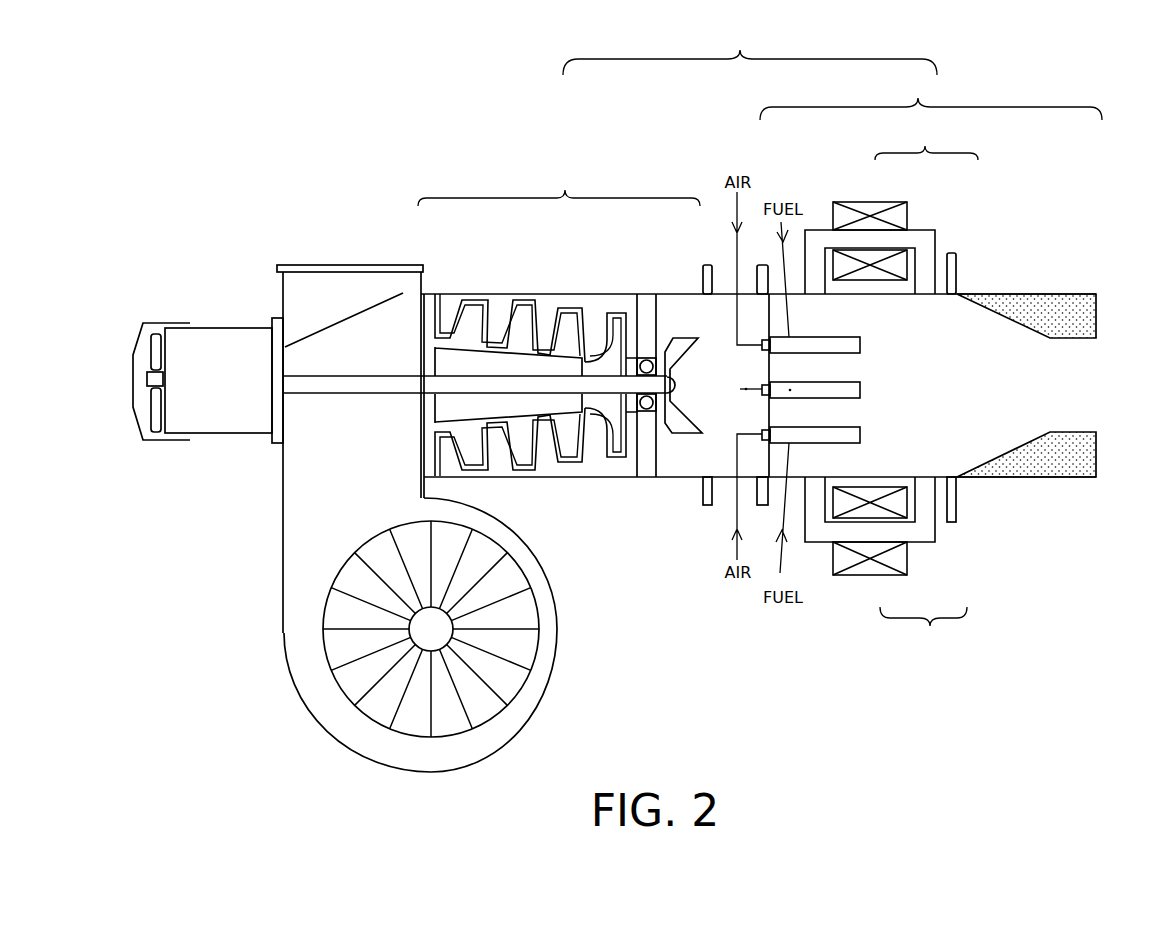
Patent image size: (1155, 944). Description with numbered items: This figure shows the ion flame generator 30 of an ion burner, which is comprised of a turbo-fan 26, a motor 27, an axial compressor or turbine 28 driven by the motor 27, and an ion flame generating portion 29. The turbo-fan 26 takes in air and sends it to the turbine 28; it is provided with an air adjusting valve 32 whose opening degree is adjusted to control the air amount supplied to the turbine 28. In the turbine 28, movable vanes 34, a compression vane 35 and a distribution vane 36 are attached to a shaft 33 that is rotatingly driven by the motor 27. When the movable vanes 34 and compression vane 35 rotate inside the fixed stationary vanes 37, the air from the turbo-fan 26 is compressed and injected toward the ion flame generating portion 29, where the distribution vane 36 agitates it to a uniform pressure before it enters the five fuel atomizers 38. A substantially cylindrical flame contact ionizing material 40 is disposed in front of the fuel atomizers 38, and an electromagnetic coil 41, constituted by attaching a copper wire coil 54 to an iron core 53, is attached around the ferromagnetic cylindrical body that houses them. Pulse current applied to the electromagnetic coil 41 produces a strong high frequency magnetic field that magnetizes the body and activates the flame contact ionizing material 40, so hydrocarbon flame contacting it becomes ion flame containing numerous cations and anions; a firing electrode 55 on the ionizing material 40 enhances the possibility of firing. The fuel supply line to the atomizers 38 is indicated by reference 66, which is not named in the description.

The turbo-fan 26 is at (326, 667).
The motor 27 is at (219, 327).
The axial compressor (turbine) 28 is at (559, 184).
The ion flame generating portion 29 is at (931, 96).
The ion flame generator 30 is at (750, 50).
The air adjusting valve 32 is at (346, 265).
The shaft 33 is at (327, 383).
The movable vanes 34 is at (475, 312).
The compression vane 35 is at (623, 317).
The distribution vane 36 is at (680, 337).
The fixed stationary vanes 37 is at (448, 294).
The fuel atomizers 38 is at (862, 344).
The flame contact ionizing material 40 is at (1020, 448).
The electromagnetic coil 41 is at (1006, 296).
The iron core 53 is at (928, 229).
The copper wire coil 54 is at (871, 202).
The firing electrode 55 is at (1076, 339).
The fuel manifold 66 is at (769, 412).